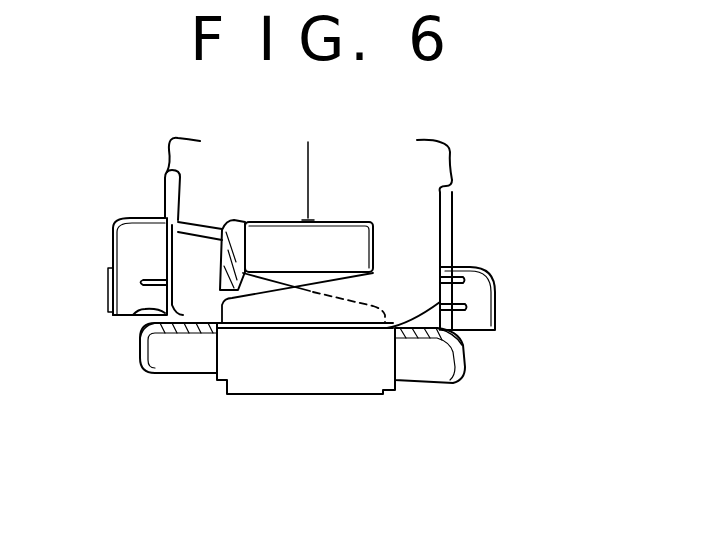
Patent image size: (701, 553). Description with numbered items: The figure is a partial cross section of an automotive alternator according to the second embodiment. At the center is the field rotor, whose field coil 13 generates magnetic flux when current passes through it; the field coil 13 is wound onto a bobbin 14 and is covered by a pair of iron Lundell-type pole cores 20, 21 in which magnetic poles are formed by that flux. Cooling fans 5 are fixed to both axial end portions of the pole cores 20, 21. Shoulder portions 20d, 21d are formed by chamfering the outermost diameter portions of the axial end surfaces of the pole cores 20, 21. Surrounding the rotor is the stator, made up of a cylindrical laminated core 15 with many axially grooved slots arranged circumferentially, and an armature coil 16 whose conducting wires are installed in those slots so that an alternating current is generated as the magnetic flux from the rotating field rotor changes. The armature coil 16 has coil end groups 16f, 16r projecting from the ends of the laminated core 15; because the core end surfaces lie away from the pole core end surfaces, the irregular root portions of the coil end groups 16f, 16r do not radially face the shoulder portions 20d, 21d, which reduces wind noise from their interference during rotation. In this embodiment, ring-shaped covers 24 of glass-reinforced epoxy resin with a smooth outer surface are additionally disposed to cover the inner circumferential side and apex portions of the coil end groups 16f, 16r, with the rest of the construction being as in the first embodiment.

The cooling fan 5 is at (110, 242).
The field coil 13 is at (358, 238).
The bobbin 14 is at (222, 232).
The laminated core 15 is at (310, 383).
The armature coil 16 is at (291, 384).
The coil end group 16r is at (186, 364).
The coil end group 16f is at (422, 373).
The pole core 20 is at (462, 156).
The shoulder portion 20d is at (462, 358).
The pole core 21 is at (162, 159).
The shoulder portion 21d is at (140, 318).
The ring-shaped cover 24 is at (143, 352).